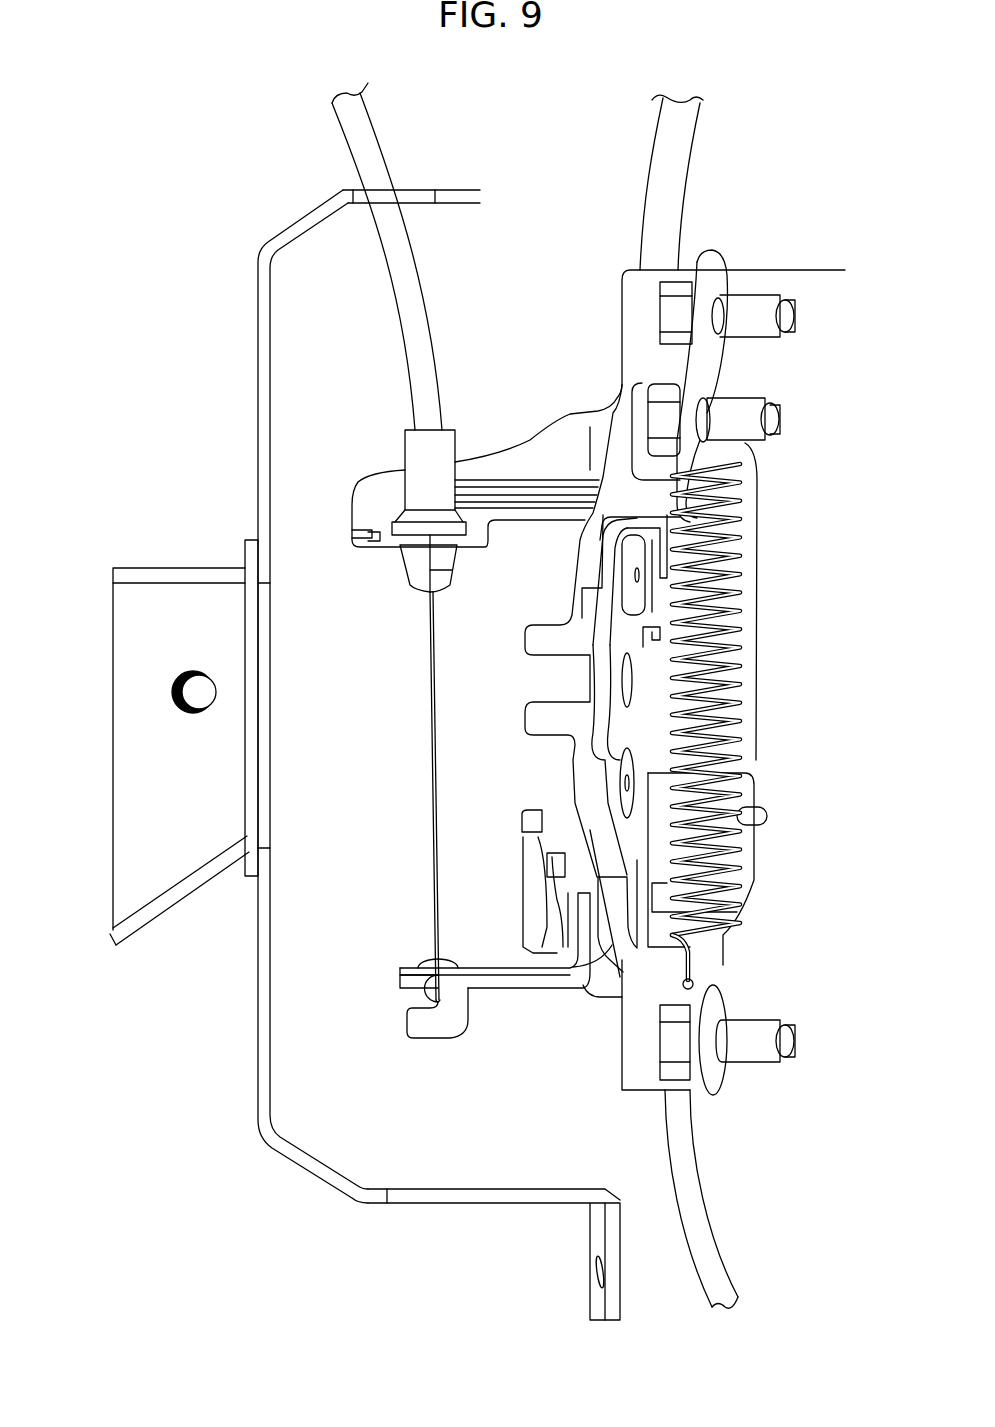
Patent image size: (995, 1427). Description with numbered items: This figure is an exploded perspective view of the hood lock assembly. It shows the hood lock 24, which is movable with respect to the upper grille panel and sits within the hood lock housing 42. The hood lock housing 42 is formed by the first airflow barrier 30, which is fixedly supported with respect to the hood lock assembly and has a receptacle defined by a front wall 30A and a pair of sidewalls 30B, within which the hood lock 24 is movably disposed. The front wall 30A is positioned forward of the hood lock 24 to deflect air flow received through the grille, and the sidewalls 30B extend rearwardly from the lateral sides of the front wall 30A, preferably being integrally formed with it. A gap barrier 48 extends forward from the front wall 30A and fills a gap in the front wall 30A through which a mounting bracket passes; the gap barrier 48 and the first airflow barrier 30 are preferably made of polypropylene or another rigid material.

The hood lock 24 is at (782, 388).
The first airflow barrier 30 is at (113, 962).
The front wall 30A is at (258, 995).
The sidewalls 30B is at (422, 188).
The hood lock housing 42 is at (290, 751).
The gap barrier 48 is at (148, 627).